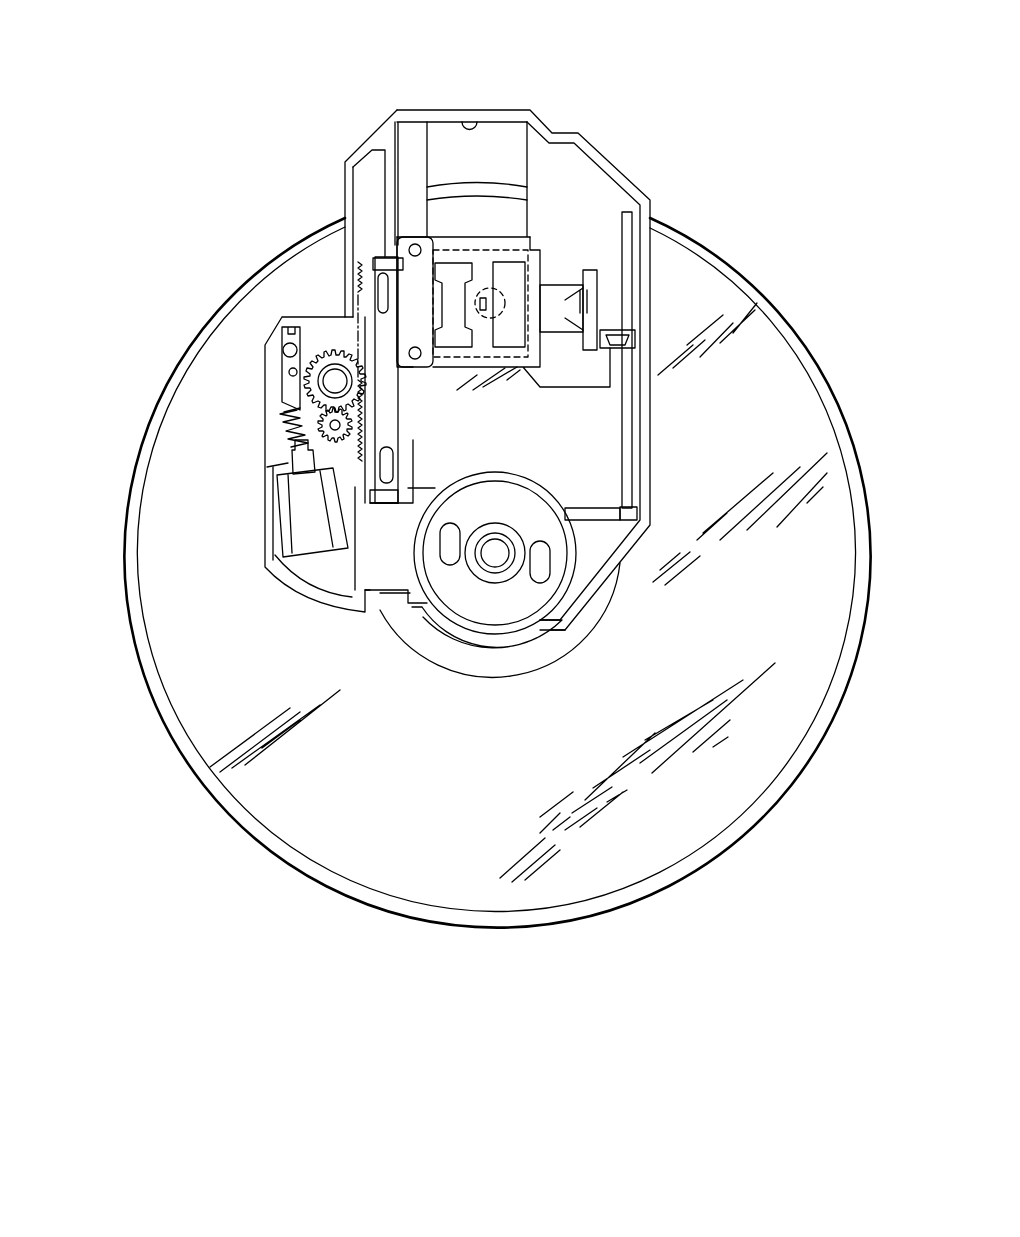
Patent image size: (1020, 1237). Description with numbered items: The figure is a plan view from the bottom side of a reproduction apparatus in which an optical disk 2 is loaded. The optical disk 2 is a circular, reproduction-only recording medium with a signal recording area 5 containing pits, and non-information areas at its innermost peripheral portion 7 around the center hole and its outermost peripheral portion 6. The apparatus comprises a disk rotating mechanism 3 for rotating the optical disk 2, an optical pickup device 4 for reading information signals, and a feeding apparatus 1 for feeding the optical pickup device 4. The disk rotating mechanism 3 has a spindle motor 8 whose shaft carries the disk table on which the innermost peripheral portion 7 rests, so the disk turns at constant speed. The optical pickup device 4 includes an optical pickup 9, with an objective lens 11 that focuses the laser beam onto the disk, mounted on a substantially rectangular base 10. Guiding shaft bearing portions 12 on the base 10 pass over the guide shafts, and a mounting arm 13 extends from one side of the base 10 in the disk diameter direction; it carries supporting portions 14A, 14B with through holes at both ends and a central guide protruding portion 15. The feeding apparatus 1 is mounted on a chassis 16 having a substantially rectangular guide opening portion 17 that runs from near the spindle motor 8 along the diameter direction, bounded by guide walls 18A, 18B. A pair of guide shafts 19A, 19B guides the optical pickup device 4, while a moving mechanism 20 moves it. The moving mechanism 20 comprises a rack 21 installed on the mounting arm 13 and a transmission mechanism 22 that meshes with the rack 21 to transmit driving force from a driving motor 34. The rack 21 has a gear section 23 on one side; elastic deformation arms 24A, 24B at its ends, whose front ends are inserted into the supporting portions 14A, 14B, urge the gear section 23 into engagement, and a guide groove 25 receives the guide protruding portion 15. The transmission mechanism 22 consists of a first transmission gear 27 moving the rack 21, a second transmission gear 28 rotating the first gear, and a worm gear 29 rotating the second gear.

The feeding apparatus 1 is at (316, 114).
The optical disk 2 is at (456, 573).
The disk rotating mechanism 3 is at (465, 618).
The optical pickup device 4 is at (640, 79).
The signal recording area 5 is at (142, 612).
The outermost peripheral portion 6 is at (149, 692).
The innermost peripheral portion 7 is at (428, 652).
The spindle motor 8 is at (498, 635).
The optical pickup 9 is at (487, 300).
The base 10 is at (452, 237).
The objective lens 11 is at (497, 290).
The guiding shaft bearing portions 12 is at (640, 345).
The mounting arm 13 is at (386, 290).
The supporting portion 14A is at (370, 245).
The supporting portion 14B is at (383, 505).
The guide protruding portion 15 is at (372, 252).
The chassis 16 is at (541, 102).
The guide opening portion 17 is at (468, 116).
The guide wall 18A is at (488, 240).
The guide wall 18B is at (393, 497).
The guide shaft 19A is at (385, 255).
The guide shaft 19B is at (626, 230).
The moving mechanism 20 is at (321, 309).
The rack 21 is at (403, 442).
The transmission mechanism 22 is at (275, 395).
The gear section 23 is at (335, 520).
The elastic deformation arm 24A is at (375, 345).
The elastic deformation arm 24B is at (395, 590).
The guide groove 25 is at (397, 398).
The first transmission gear 27 is at (321, 346).
The second transmission gear 28 is at (297, 410).
The worm gear 29 is at (287, 445).
The driving motor 34 is at (298, 507).